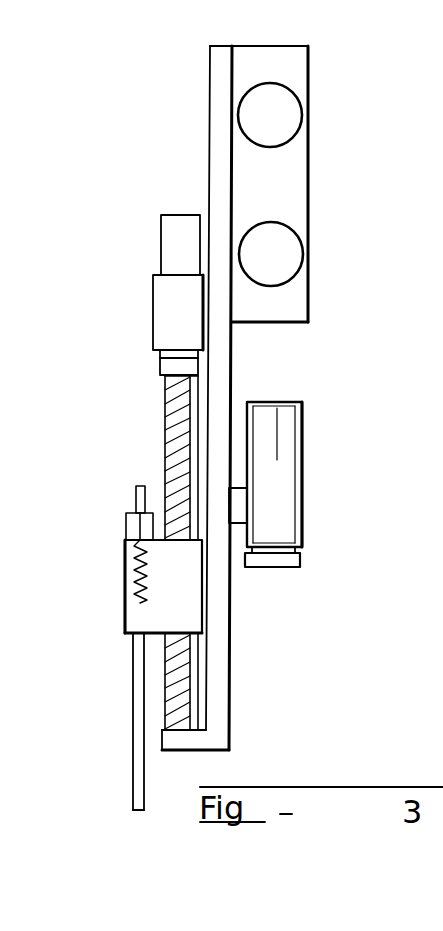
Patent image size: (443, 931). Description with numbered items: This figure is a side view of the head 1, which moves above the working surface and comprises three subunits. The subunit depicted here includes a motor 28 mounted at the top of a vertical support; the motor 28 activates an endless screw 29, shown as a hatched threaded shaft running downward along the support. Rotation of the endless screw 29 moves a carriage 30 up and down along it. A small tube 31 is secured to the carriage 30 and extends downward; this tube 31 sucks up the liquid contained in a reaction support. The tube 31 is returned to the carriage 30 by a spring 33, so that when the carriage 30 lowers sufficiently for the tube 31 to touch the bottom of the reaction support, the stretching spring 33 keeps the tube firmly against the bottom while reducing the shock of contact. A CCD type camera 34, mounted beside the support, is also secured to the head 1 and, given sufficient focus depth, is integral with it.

The head 1 is at (272, 657).
The motor 28 is at (170, 300).
The endless screw 29 is at (173, 410).
The carriage 30 is at (150, 617).
The tube 31 is at (132, 690).
The spring 33 is at (127, 553).
The CCD type camera 34 is at (288, 440).